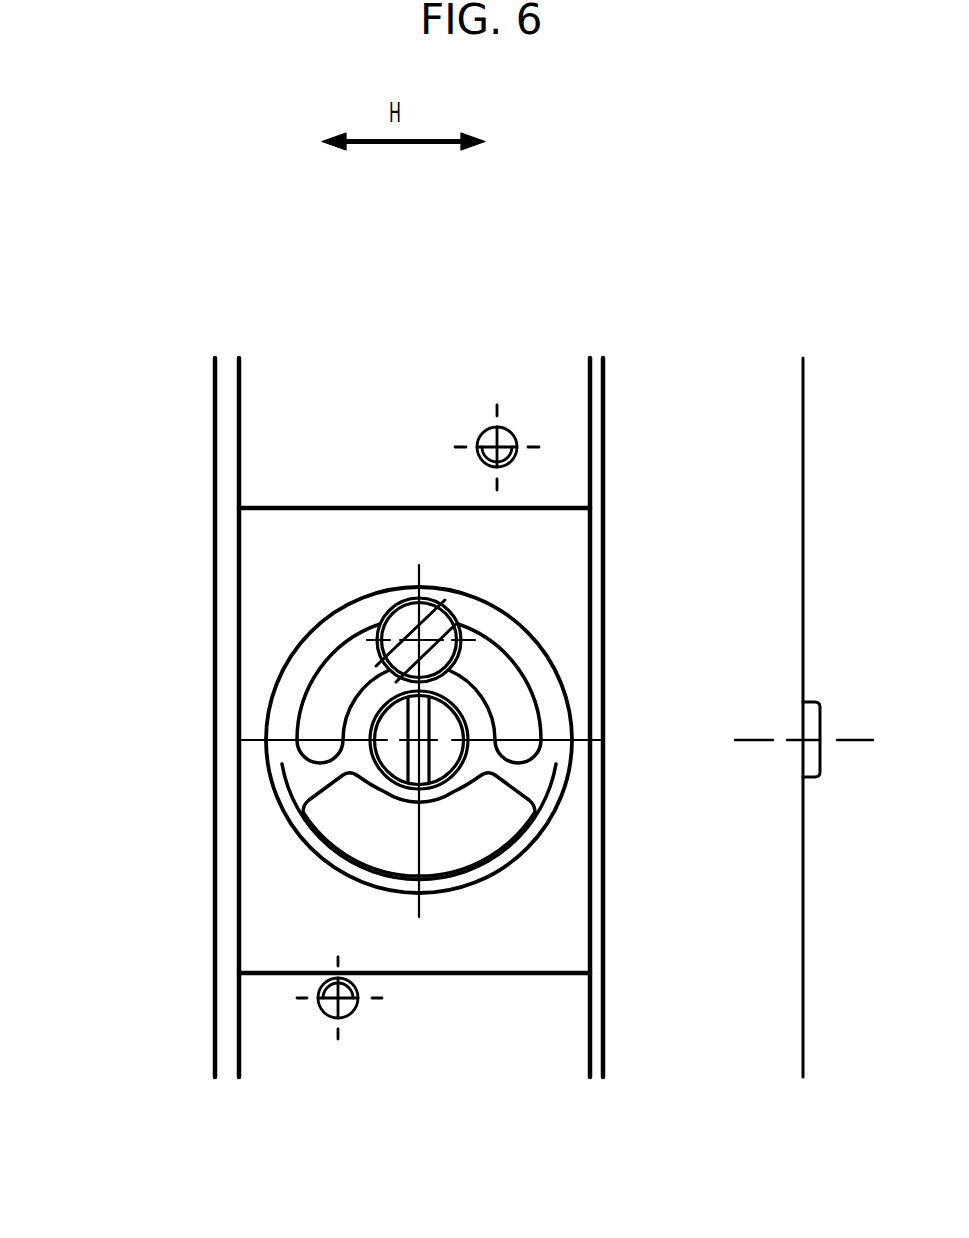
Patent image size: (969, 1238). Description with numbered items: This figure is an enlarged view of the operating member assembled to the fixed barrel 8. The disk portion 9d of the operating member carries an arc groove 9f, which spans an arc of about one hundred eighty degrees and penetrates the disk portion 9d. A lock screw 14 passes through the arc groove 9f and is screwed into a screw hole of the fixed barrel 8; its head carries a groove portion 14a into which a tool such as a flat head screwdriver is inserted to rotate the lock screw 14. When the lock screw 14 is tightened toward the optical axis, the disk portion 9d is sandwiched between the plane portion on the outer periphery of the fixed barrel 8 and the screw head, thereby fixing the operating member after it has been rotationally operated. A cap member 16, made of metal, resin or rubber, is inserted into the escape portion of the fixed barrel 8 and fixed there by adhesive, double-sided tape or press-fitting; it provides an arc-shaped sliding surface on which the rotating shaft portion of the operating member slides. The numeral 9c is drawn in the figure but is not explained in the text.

The fixed barrel 8 is at (503, 1023).
The hub of drive wheel 9c is at (410, 733).
The disk portion 9d is at (490, 607).
The arc groove 9f is at (343, 647).
The lock screw 14 is at (393, 615).
The groove portion 14a is at (433, 622).
The cap member 16 is at (317, 732).